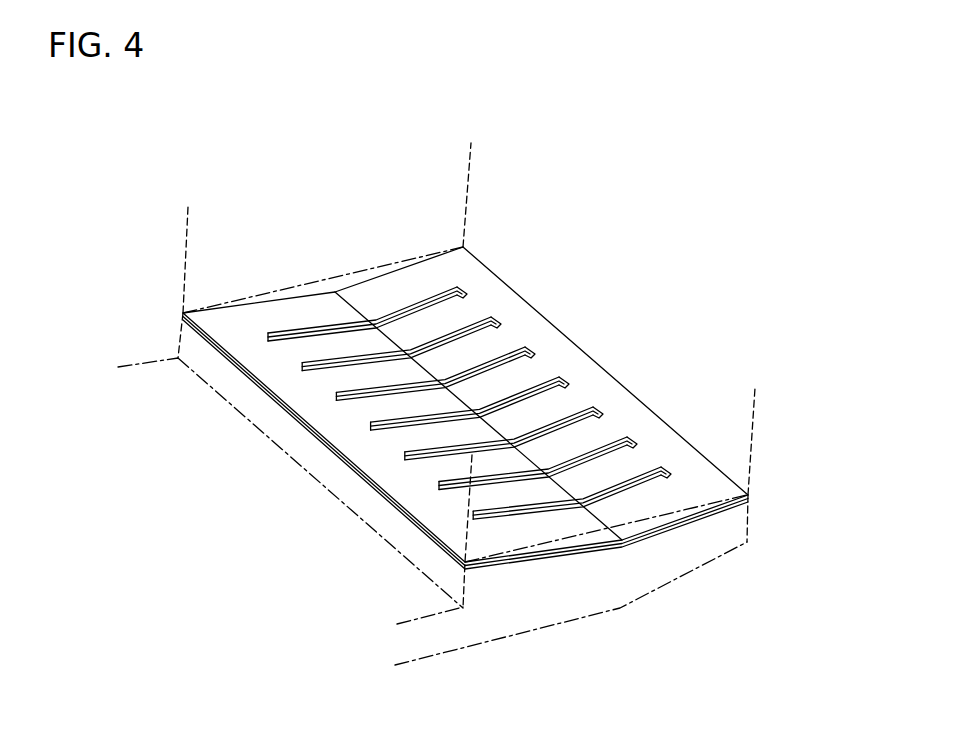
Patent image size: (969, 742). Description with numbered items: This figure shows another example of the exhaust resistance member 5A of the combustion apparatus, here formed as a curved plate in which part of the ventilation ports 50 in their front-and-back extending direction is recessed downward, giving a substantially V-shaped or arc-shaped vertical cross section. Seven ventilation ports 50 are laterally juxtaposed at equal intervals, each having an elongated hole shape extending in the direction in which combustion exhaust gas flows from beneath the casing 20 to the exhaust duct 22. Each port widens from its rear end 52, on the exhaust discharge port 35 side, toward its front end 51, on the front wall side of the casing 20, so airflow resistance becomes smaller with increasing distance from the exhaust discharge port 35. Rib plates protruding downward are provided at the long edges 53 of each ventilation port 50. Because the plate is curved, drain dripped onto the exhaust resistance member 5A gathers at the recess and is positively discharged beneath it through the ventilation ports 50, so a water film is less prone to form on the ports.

The exhaust resistance member 5A is at (325, 425).
The ventilation port 50 is at (454, 393).
The front end 51 is at (457, 293).
The rear end 52 is at (268, 337).
The long edge 53 is at (417, 312).
The casing 20 is at (752, 442).
The exhaust duct 22 is at (717, 580).
The exhaust discharge port 35 is at (477, 625).